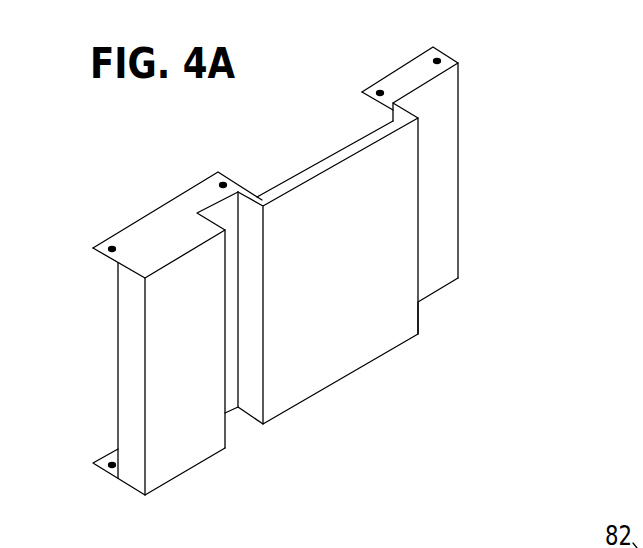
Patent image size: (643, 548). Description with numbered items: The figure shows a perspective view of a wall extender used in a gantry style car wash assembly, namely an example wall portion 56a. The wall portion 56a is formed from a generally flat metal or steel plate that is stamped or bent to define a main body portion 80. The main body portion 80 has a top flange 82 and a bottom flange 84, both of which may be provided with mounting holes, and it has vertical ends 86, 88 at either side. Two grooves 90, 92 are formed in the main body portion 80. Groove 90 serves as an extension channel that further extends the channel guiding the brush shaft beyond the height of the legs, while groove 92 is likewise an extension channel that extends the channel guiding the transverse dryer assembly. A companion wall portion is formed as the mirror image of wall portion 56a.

The wall portion 56a is at (538, 130).
The main body portion 80 is at (352, 373).
The top flange 82 is at (157, 227).
The bottom flange 84 is at (106, 471).
The vertical end 86 is at (128, 388).
The vertical end 88 is at (458, 180).
The groove 90 is at (235, 436).
The groove 92 is at (436, 308).